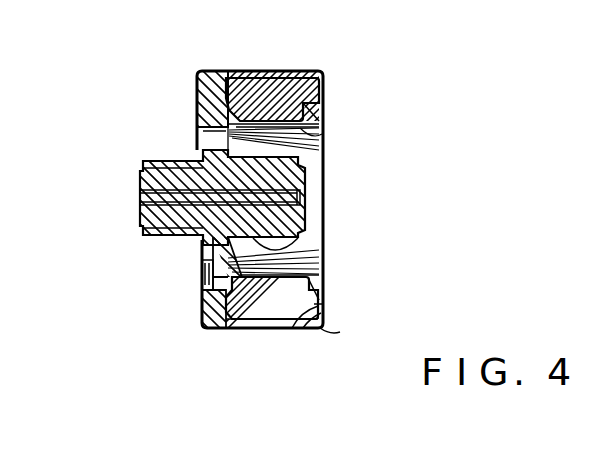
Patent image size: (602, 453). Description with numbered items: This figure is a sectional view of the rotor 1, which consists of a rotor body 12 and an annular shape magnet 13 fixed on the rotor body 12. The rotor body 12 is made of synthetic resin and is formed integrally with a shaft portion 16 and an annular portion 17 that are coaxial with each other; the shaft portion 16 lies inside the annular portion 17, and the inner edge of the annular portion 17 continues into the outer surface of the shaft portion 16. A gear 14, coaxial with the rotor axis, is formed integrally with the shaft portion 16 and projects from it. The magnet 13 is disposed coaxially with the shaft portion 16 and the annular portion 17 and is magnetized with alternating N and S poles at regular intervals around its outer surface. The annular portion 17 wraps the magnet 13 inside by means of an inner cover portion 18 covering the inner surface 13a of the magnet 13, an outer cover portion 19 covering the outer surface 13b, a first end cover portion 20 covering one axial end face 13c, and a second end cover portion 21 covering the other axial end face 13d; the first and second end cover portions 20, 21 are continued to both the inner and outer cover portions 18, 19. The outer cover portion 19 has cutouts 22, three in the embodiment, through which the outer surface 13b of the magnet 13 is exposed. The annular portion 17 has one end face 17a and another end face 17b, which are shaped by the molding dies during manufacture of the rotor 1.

The rotor 1 is at (413, 100).
The rotor body 12 is at (328, 161).
The annular shape magnet 13 is at (318, 76).
The inner surface 13a is at (310, 268).
The outer surface 13b is at (285, 331).
The axial end face 13c is at (313, 321).
The axial end face 13d is at (210, 331).
The gear 14 is at (159, 237).
The shaft portion 16 is at (282, 252).
The annular portion 17 is at (228, 329).
The end face 17a is at (317, 294).
The end face 17b is at (200, 302).
The inner cover portion 18 is at (322, 131).
The outer cover portion 19 is at (282, 69).
The first end cover portion 20 is at (313, 104).
The second end cover portion 21 is at (206, 92).
The cutouts 22 is at (303, 341).